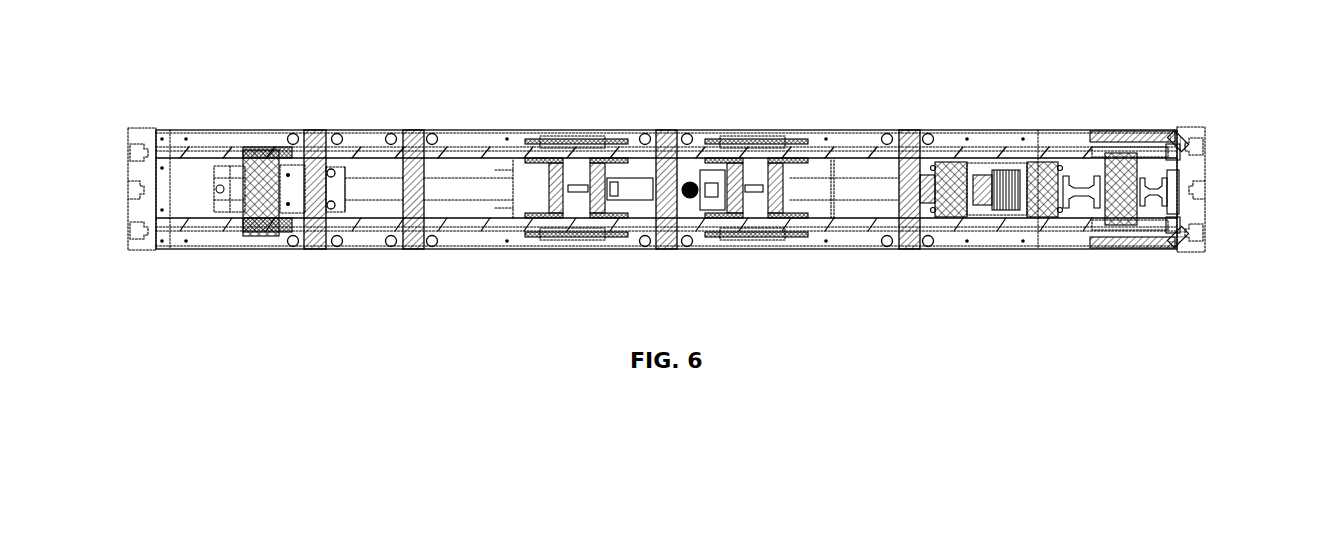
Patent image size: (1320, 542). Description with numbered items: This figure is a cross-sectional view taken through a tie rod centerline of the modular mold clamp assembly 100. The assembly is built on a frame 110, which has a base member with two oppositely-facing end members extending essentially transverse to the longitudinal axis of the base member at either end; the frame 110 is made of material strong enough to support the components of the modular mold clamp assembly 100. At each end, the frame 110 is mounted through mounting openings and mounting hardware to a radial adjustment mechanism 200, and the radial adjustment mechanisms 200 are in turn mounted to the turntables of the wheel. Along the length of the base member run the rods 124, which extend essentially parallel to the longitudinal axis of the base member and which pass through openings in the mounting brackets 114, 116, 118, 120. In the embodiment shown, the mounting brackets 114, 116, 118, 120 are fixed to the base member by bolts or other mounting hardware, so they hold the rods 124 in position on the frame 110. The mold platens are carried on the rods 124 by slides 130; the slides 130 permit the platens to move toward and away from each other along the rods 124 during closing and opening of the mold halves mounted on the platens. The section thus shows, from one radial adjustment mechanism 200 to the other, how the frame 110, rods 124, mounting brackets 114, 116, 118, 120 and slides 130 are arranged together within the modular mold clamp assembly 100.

The modular mold clamp assembly 100 is at (230, 68).
The frame 110 is at (168, 112).
The mounting bracket 114 is at (320, 246).
The mounting bracket 116 is at (418, 246).
The mounting bracket 118 is at (668, 248).
The mounting bracket 120 is at (903, 147).
The rod 124 is at (474, 150).
The slide 130 is at (578, 165).
The radial adjustment mechanism 200 is at (1198, 123).